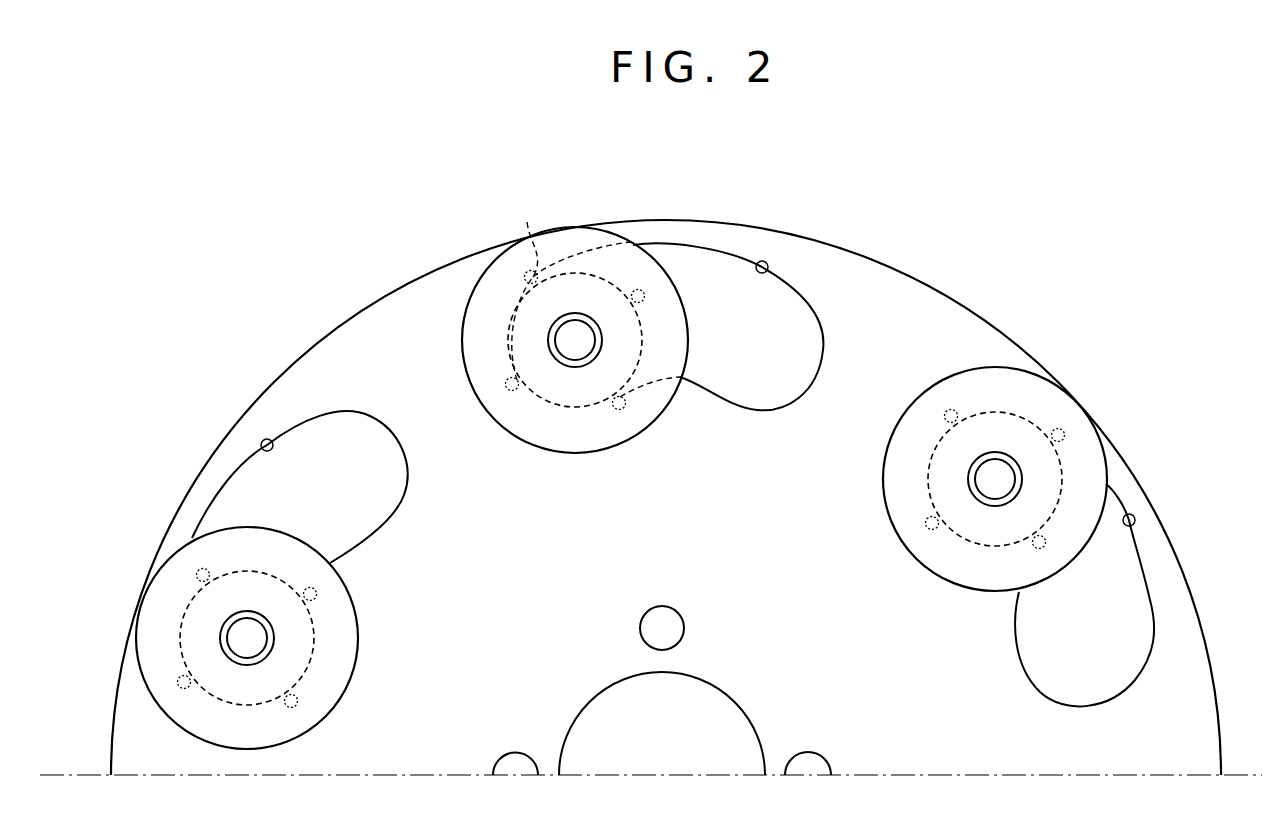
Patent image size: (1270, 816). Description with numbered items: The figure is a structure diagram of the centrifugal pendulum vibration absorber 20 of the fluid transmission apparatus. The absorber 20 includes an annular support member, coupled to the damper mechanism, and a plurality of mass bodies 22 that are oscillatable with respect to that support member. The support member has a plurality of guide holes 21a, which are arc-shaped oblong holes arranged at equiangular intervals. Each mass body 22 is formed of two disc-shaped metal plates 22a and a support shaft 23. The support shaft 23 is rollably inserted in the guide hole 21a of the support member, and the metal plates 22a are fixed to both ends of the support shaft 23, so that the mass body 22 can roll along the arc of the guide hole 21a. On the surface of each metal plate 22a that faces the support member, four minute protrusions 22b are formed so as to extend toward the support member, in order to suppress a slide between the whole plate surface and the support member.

The centrifugal pendulum vibration absorber 20 is at (987, 292).
The guide hole 21a is at (766, 264).
The mass body 22 is at (612, 452).
The metal plate 22a is at (497, 277).
The minute protrusion 22b is at (527, 222).
The support shaft 23 is at (573, 340).